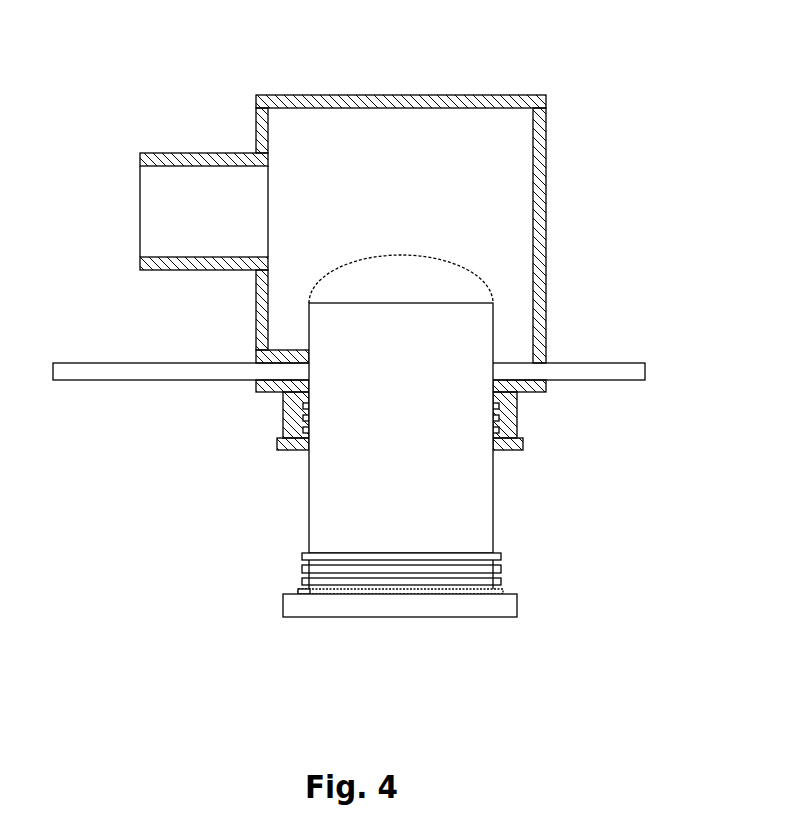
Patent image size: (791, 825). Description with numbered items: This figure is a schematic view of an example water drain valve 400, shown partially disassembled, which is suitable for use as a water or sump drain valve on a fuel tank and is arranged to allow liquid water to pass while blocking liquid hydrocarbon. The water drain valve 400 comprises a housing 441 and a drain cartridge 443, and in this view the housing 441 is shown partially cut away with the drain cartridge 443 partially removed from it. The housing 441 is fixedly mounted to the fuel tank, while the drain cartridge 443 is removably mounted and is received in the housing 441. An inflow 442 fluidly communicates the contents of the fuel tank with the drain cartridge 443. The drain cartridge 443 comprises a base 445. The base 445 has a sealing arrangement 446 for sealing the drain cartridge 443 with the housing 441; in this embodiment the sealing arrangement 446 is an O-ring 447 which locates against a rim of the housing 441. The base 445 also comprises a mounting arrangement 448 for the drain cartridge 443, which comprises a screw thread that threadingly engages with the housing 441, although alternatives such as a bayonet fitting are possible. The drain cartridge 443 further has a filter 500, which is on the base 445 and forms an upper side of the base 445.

The water drain valve 400 is at (596, 128).
The housing 441 is at (451, 95).
The inflow 442 is at (140, 197).
The drain cartridge 443 is at (495, 336).
The base 445 is at (408, 617).
The sealing arrangement 446 is at (507, 590).
The O-ring 447 is at (292, 591).
The mounting arrangement 448 is at (503, 558).
The filter 500 is at (495, 508).